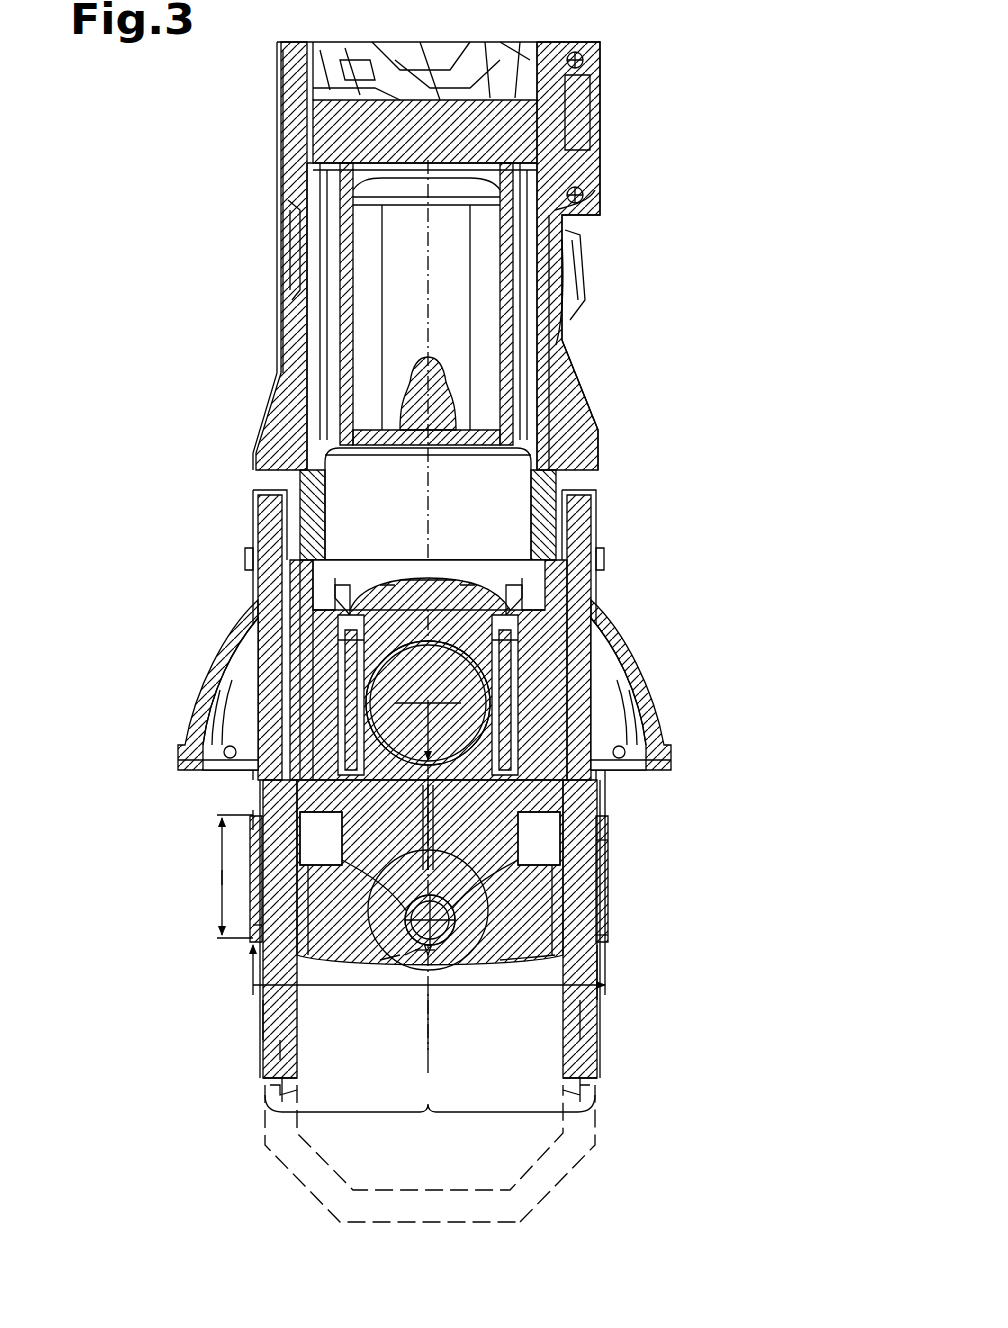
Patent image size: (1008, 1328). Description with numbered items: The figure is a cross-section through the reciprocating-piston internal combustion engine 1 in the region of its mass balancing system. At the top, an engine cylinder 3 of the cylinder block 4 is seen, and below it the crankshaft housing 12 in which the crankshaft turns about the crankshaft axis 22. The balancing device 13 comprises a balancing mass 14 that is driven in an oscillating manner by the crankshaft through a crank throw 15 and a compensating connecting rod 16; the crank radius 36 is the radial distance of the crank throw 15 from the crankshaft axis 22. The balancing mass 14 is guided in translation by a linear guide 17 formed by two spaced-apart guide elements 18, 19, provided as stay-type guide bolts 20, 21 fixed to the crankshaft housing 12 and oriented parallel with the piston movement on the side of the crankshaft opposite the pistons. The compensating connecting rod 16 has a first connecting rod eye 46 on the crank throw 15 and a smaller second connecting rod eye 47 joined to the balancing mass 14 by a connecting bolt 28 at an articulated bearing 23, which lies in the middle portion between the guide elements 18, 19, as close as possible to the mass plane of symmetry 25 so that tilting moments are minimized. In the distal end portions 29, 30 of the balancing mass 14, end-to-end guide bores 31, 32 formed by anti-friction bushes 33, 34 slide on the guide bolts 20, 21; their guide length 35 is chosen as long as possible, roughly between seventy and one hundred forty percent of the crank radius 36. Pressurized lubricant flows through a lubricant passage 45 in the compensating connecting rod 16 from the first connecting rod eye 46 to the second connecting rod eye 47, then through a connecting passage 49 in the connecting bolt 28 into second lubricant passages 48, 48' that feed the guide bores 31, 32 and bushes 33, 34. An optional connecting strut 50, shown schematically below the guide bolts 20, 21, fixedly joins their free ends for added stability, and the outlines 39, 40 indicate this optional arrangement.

The reciprocating-piston internal combustion engine 1 is at (632, 46).
The engine cylinder 3 is at (560, 320).
The cylinder block 4 is at (592, 420).
The crankshaft housing 12 is at (602, 663).
The balancing device 13 is at (205, 813).
The balancing mass 14 is at (517, 953).
The crank throw 15 is at (320, 628).
The compensating connecting rod 16 is at (258, 927).
The linear guide 17 is at (430, 1130).
The guide element 18 is at (268, 1050).
The guide element 19 is at (602, 1010).
The guide bolt 20 is at (268, 1060).
The guide bolt 21 is at (605, 1052).
The crankshaft axis 22 is at (548, 800).
The bearing 23 is at (420, 955).
The mass plane of symmetry 25 is at (492, 987).
The connecting bolt 28 is at (417, 948).
The distal end portion 29 is at (262, 1020).
The distal end portion 30 is at (615, 955).
The guide bore 31 is at (238, 950).
The guide bore 32 is at (608, 933).
The anti-friction bush 33 is at (253, 845).
The anti-friction bush 34 is at (610, 870).
The guide length 35 is at (222, 877).
The crank radius 36 is at (258, 715).
The nozzle outer contour 39 is at (250, 1097).
The nozzle outer contour 40 is at (617, 1093).
The lubricant passage 45 is at (447, 950).
The first connecting rod eye 46 is at (610, 717).
The second connecting rod eye 47 is at (423, 952).
The second lubricant passage 48 is at (187, 879).
The second lubricant passage 48' is at (676, 879).
The connecting passage 49 is at (397, 955).
The connecting strut 50 is at (300, 1160).